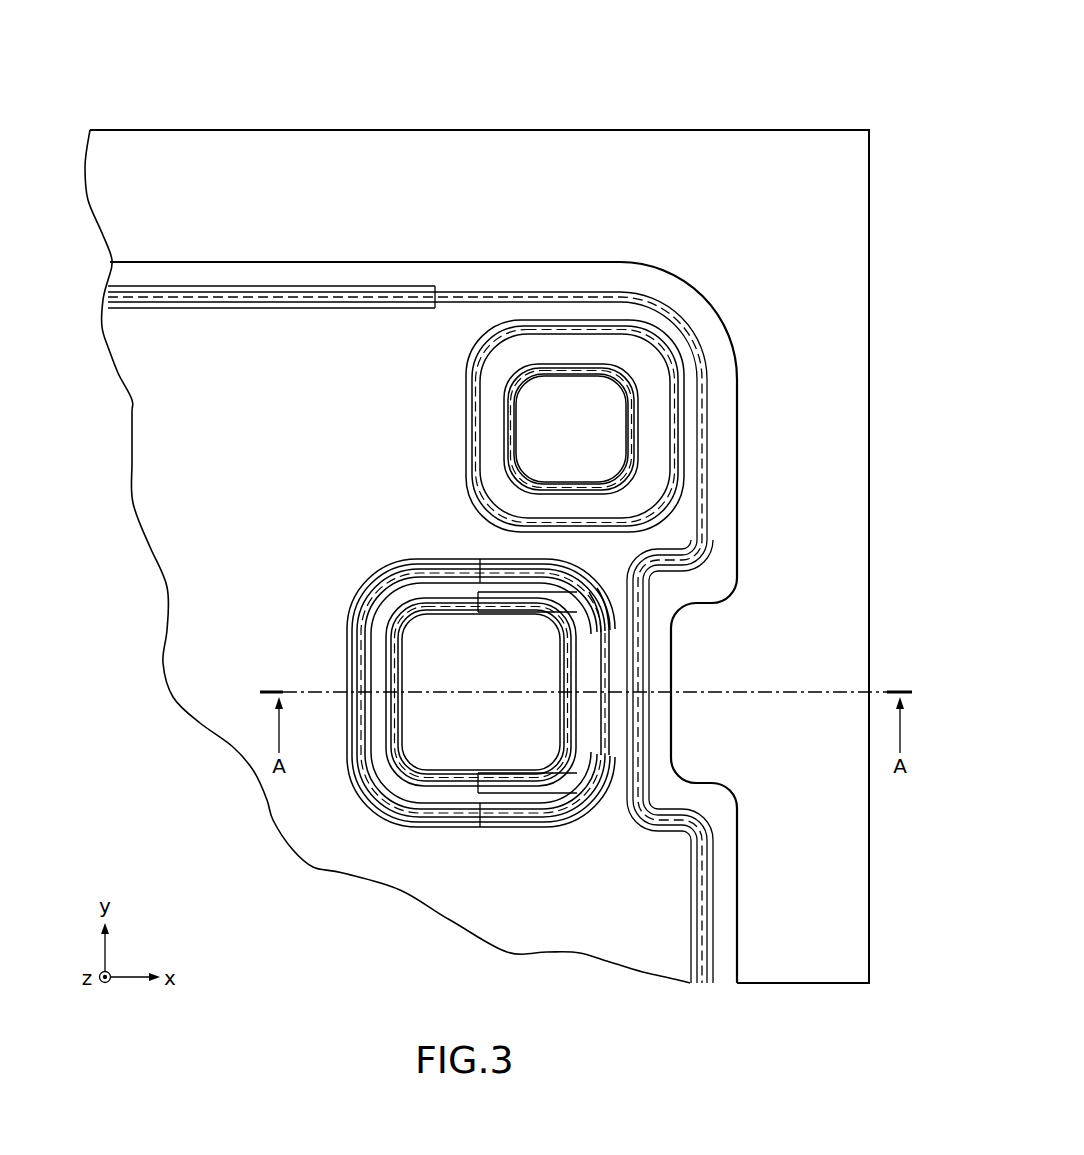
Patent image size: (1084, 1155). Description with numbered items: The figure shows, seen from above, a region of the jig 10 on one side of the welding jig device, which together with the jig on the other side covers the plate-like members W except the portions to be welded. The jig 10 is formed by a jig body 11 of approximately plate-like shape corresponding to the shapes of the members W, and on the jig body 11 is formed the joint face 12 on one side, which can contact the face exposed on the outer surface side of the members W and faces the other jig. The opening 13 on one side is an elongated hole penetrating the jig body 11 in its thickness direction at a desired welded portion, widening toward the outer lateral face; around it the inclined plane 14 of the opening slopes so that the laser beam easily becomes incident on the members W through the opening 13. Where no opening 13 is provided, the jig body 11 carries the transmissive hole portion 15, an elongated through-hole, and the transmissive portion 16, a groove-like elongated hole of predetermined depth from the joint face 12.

The jig on one side 10 is at (703, 98).
The jig body 11 is at (782, 172).
The joint face on one side 12 is at (720, 392).
The plate-like members W is at (737, 440).
The opening on one side 13 is at (642, 715).
The inclined plane of the opening 14 is at (645, 742).
The transmissive hole portion 15 is at (392, 700).
The transmissive portion 16 is at (597, 703).